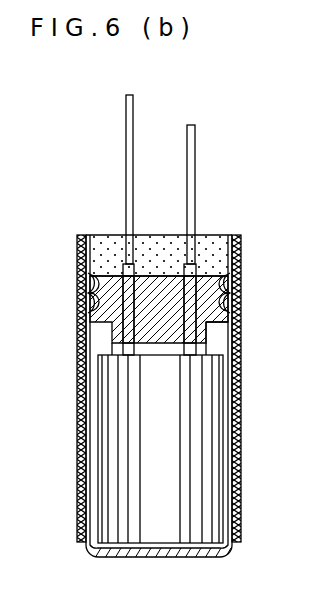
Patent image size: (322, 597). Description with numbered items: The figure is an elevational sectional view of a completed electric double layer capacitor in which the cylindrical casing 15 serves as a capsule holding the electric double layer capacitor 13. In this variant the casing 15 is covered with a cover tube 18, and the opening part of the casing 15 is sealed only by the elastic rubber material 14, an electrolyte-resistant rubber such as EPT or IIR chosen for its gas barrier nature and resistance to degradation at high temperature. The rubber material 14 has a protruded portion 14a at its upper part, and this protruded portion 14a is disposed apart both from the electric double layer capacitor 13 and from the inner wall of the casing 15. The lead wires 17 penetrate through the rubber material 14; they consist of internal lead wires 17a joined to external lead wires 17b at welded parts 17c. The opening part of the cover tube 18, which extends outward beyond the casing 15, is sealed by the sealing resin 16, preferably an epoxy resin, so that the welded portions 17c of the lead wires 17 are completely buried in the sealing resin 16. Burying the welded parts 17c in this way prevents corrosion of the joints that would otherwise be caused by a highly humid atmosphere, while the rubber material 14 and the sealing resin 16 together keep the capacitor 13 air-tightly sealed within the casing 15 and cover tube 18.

The electric double layer capacitor 13 is at (190, 467).
The elastic rubber material 14 is at (229, 300).
The protruded portion 14a is at (205, 330).
The cylindrical casing 15 is at (88, 382).
The sealing resin 16 is at (218, 247).
The lead wires 17 is at (166, 225).
The internal lead wires 17a is at (128, 310).
The external lead wires 17b is at (126, 163).
The welded parts 17c is at (124, 265).
The cover tube 18 is at (78, 432).